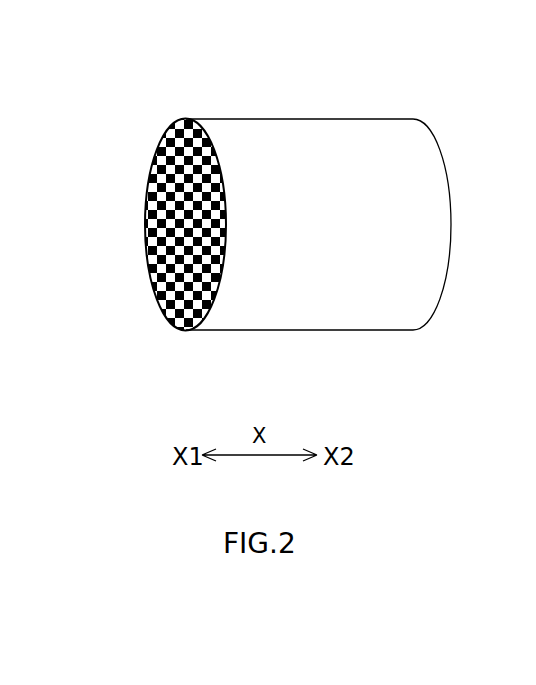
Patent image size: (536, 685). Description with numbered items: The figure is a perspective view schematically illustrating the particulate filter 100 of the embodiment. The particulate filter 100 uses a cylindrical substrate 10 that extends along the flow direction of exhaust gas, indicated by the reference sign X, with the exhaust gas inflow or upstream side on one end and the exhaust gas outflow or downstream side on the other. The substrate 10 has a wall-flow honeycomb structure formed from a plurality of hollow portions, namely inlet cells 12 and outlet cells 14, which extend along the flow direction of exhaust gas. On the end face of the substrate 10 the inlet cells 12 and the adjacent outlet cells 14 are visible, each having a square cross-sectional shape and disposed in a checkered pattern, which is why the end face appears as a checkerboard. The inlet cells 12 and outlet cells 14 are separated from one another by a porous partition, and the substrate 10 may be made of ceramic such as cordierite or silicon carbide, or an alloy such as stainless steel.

The particulate filter 100 is at (364, 119).
The substrate 10 is at (275, 123).
The inlet cell 12 is at (148, 185).
The outlet cell 14 is at (147, 208).